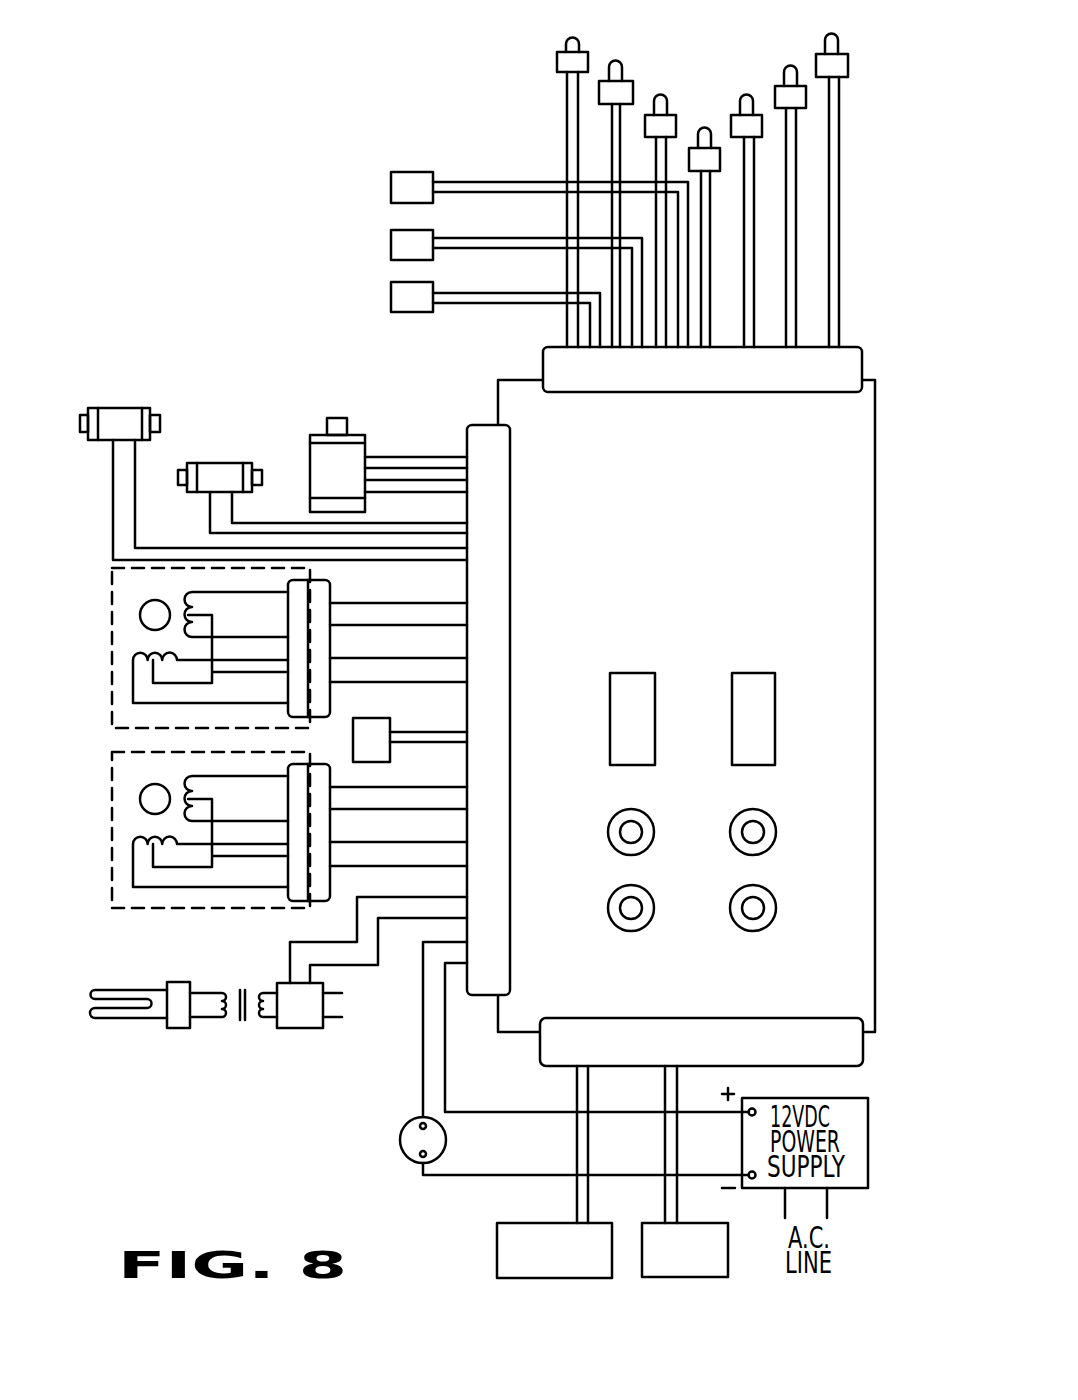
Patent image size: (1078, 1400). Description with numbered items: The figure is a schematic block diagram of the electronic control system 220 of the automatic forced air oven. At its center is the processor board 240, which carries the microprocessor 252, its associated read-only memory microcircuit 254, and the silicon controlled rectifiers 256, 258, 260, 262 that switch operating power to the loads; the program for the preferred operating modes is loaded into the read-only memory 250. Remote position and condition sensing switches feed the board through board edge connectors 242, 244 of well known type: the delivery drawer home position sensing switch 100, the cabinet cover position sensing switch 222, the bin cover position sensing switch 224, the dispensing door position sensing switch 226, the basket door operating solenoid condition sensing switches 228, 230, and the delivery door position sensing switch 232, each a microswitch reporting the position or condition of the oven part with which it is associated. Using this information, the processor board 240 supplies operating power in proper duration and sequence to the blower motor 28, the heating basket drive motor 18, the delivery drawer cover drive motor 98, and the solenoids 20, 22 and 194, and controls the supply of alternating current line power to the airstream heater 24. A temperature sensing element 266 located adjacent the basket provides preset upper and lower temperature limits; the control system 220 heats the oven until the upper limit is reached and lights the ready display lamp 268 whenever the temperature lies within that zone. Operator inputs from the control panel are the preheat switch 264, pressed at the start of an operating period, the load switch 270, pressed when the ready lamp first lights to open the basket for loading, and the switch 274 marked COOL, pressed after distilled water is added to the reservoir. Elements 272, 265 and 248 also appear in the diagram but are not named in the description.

The delivery drawer home position sensing switch 100 is at (557, 57).
The cabinet cover position sensing switch 222 is at (605, 81).
The delivery door position sensing switch 232 is at (653, 115).
The basket door operating solenoid condition sensing switch 228 is at (695, 148).
The basket door operating solenoid condition sensing switch 230 is at (737, 115).
The bin cover position sensing switch 224 is at (782, 86).
The dispensing door position sensing switch 226 is at (826, 54).
The cool switch 272 is at (434, 175).
The load switch 270 is at (434, 236).
The preheat switch 264 is at (428, 313).
The board edge connector 242 is at (860, 355).
The board edge connector 244 is at (484, 425).
The processor board 240 is at (706, 618).
The lower connector 265 is at (797, 1025).
The food basket door operating solenoid 20 is at (130, 408).
The food basket door operating solenoid 22 is at (232, 463).
The solenoid 194 is at (310, 457).
The delivery drawer cover drive motor 98 is at (112, 676).
The food basket rotating motor 18 is at (112, 872).
The temperature sensing element 266 is at (388, 721).
The air heating element 24 is at (117, 985).
The read-only memory 250 is at (243, 985).
The relay 248 is at (298, 1030).
The air blower drive motor 28 is at (400, 1146).
The microprocessor 252 is at (616, 719).
The read-only memory microcircuit 254 is at (775, 720).
The silicon controlled rectifier 256 is at (625, 829).
The silicon controlled rectifier 258 is at (625, 908).
The silicon controlled rectifier 260 is at (757, 826).
The silicon controlled rectifier 262 is at (757, 904).
The ready display lamp 268 is at (497, 1258).
The COOL switch 274 is at (690, 1278).
The electronic control system 220 is at (250, 1138).